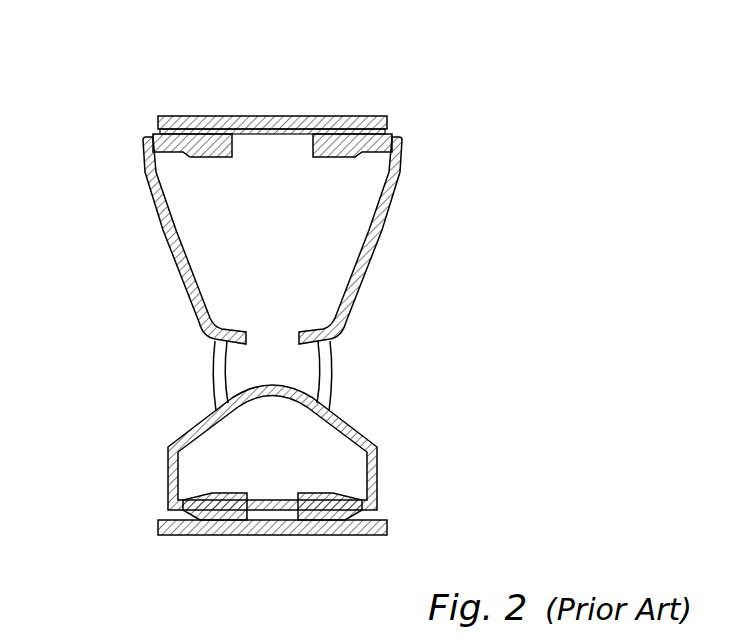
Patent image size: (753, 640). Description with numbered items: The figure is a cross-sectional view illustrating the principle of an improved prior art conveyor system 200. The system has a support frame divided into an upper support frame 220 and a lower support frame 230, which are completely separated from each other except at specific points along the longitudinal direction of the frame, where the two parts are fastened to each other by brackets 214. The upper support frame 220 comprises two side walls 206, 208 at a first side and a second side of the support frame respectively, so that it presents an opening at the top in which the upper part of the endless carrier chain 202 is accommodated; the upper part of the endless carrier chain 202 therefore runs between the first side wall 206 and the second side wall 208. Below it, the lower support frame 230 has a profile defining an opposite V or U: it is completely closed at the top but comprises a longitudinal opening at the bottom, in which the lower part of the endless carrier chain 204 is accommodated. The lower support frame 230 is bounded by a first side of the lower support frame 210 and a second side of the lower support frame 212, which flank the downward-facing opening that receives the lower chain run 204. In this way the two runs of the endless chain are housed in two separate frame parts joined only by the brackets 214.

The conveyor system 200 is at (452, 127).
The upper part of endless carrier chain 202 is at (287, 116).
The lower part of endless carrier chain 204 is at (283, 535).
The first side wall of upper support frame 206 is at (400, 189).
The second side wall of upper support frame 208 is at (160, 228).
The first side of lower support frame 210 is at (378, 470).
The second side of lower support frame 212 is at (167, 450).
The bracket 214 is at (222, 370).
The upper support frame 220 is at (432, 262).
The lower support frame 230 is at (424, 427).